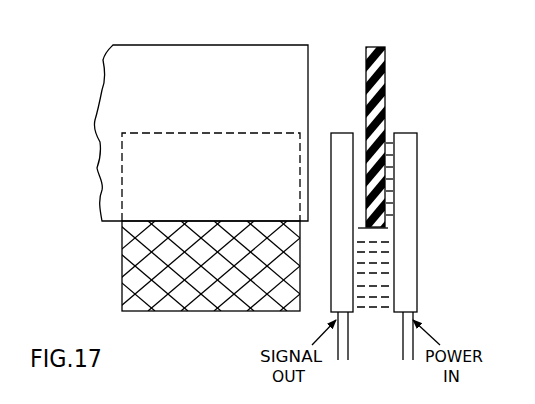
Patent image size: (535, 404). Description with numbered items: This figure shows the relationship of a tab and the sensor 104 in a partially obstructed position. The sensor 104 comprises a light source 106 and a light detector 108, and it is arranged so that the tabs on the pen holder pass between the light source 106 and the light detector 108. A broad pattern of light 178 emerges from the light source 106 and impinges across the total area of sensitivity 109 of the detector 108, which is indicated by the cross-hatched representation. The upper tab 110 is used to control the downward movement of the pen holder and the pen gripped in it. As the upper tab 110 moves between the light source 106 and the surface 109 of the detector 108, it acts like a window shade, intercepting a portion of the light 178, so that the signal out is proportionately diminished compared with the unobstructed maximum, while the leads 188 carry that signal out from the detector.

The upper tab 110 is at (238, 60).
The total area of sensitivity 109 is at (138, 284).
The broad pattern of light 178 is at (373, 257).
The light detector 108 is at (344, 138).
The sensor 104 is at (421, 194).
The light source 106 is at (407, 302).
The signal output leads 188 is at (343, 365).